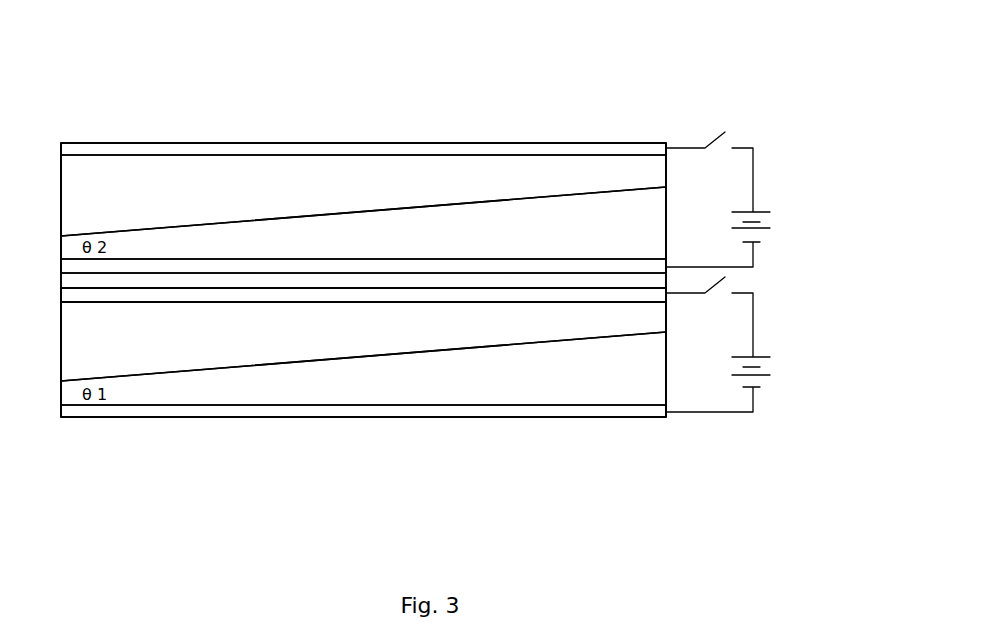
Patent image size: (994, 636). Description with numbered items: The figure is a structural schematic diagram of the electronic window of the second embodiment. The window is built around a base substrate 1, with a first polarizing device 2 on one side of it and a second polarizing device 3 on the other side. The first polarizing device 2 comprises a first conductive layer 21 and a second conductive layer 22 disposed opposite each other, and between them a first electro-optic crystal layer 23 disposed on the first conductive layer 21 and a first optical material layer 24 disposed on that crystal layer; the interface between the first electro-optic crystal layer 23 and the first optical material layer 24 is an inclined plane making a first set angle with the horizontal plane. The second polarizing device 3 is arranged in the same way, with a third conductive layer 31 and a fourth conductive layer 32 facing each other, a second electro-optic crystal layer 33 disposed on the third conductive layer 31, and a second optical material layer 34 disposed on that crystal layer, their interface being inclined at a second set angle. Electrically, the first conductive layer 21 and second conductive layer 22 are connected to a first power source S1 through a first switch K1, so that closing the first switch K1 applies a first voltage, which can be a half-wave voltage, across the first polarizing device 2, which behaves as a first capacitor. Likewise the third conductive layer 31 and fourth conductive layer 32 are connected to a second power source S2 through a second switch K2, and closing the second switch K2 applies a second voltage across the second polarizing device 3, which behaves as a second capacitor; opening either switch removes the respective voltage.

The base substrate 1 is at (488, 283).
The first polarizing device 2 is at (187, 500).
The second polarizing device 3 is at (423, 62).
The first conductive layer 21 is at (155, 412).
The second conductive layer 22 is at (350, 293).
The first electro-optic crystal layer 23 is at (209, 376).
The first optical material layer 24 is at (282, 323).
The third conductive layer 31 is at (337, 270).
The fourth conductive layer 32 is at (138, 152).
The second electro-optic crystal layer 33 is at (266, 238).
The second optical material layer 34 is at (195, 187).
The first switch K1 is at (709, 281).
The second switch K2 is at (709, 136).
The first power source S1 is at (733, 352).
The second power source S2 is at (733, 207).